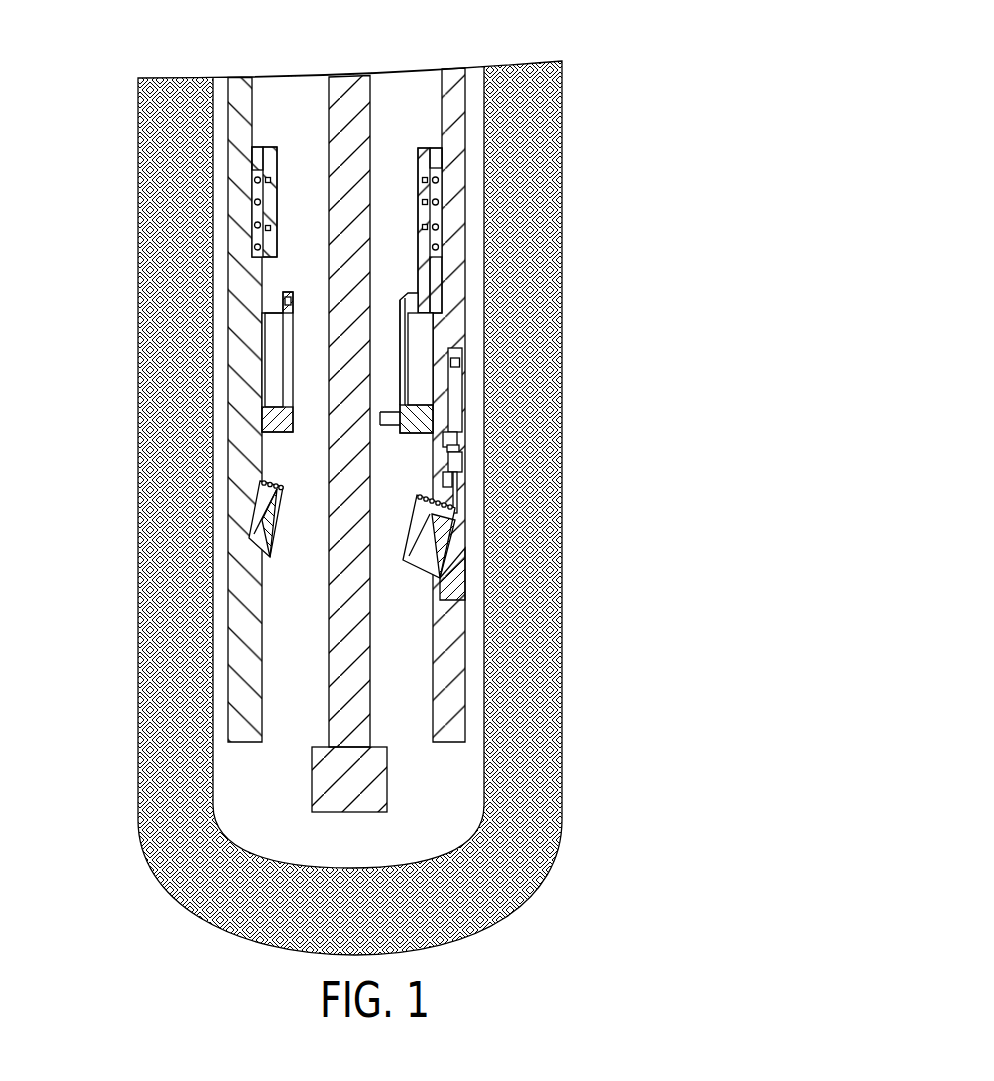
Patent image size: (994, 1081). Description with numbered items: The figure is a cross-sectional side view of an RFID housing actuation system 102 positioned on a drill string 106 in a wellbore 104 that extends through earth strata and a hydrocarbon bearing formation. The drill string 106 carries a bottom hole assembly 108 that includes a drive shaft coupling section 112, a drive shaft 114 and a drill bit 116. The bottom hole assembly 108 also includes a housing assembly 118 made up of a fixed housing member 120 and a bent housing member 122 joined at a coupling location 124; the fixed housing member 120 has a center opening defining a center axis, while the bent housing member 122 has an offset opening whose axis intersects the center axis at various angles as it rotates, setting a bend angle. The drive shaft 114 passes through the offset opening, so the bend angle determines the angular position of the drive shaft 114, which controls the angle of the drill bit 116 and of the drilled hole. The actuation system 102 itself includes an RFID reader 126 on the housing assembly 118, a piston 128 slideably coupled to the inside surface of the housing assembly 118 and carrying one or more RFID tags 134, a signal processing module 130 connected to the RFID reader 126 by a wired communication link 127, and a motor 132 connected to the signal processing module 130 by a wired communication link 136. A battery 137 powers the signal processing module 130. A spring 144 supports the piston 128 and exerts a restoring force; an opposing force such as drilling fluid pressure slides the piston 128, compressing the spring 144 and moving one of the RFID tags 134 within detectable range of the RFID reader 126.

The RFID housing actuation system 102 is at (582, 274).
The wellbore 104 is at (428, 140).
The drill string 106 is at (227, 142).
The bottom hole assembly 108 is at (208, 407).
The drive shaft coupling section 112 is at (432, 162).
The drive shaft 114 is at (350, 90).
The drill bit 116 is at (368, 778).
The housing assembly 118 is at (240, 122).
The fixed housing member 120 is at (452, 528).
The bent housing member 122 is at (457, 668).
The coupling location 124 is at (208, 495).
The RFID reader 126 is at (283, 313).
The wired communication link 127 is at (455, 435).
The piston 128 is at (438, 180).
The signal processing module 130 is at (460, 352).
The motor 132 is at (463, 467).
The RFID tags 134 is at (438, 247).
The wired communication link 136 is at (458, 447).
The battery 137 is at (462, 362).
The spring 144 is at (253, 202).